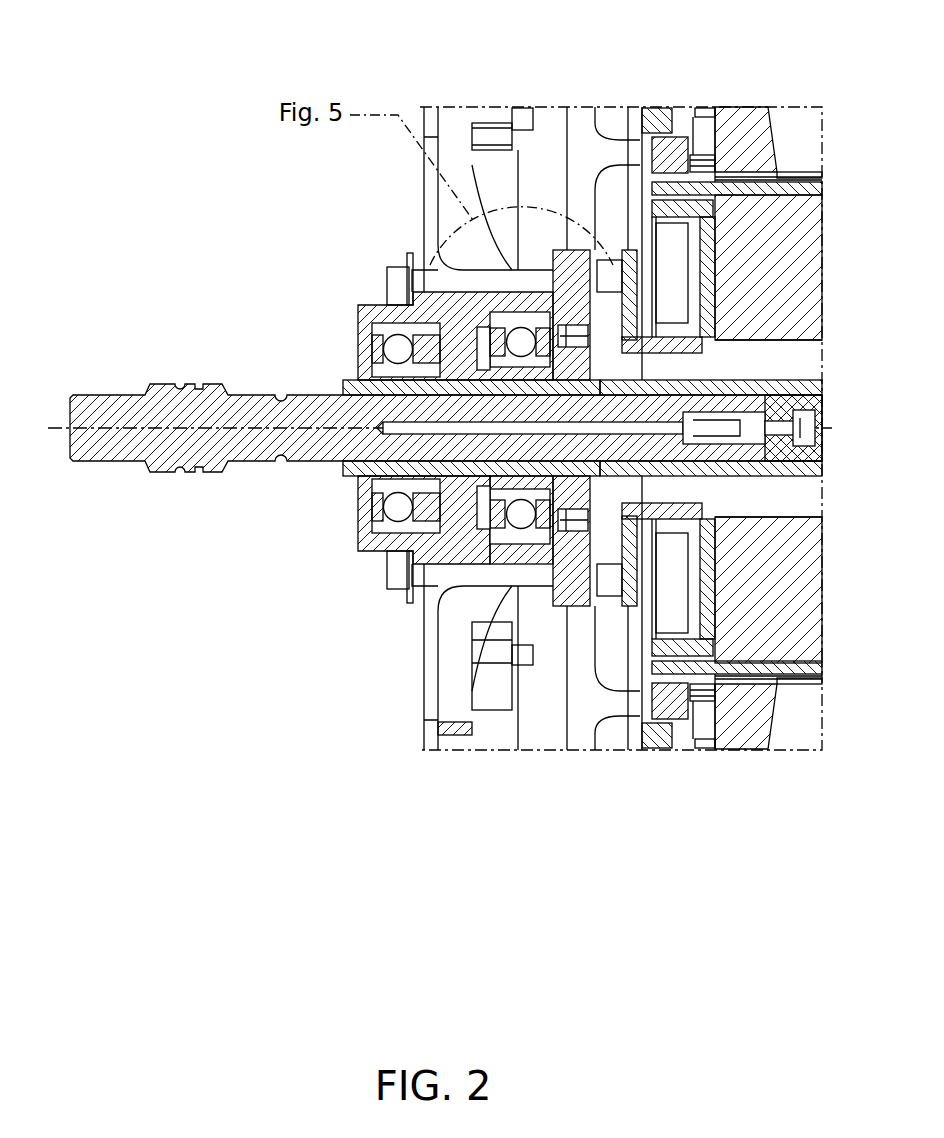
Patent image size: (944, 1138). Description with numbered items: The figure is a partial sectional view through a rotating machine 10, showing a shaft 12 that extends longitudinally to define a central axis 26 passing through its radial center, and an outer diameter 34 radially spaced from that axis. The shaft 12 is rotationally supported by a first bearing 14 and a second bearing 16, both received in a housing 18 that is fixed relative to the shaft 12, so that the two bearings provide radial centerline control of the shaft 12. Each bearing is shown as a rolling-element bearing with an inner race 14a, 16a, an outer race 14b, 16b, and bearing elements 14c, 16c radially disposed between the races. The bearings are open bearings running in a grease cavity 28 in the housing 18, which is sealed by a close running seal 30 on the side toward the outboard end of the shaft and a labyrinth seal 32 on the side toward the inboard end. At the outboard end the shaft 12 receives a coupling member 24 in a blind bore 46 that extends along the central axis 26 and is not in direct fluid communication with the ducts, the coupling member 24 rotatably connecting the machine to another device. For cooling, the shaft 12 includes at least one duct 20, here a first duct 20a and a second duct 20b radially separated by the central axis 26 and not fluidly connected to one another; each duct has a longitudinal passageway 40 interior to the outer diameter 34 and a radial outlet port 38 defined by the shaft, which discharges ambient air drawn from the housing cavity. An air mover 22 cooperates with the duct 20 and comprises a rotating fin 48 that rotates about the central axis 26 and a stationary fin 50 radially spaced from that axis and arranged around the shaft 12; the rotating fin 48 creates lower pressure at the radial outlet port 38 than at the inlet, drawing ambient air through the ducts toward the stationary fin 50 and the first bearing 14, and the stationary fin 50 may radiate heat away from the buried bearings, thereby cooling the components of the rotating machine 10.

The rotating machine 10 is at (190, 48).
The shaft 12 is at (812, 393).
The first bearing 14 is at (500, 295).
The inner race 14a is at (360, 530).
The outer race 14b is at (426, 296).
The bearing elements 14c is at (468, 552).
The second bearing 16 is at (355, 305).
The inner race 16a is at (360, 480).
The outer race 16b is at (358, 320).
The bearing elements 16c is at (358, 367).
The housing 18 is at (802, 222).
The duct 20 is at (878, 292).
The first duct 20a is at (790, 357).
The second duct 20b is at (790, 497).
The air mover 22 is at (582, 170).
The coupling member 24 is at (95, 447).
The central axis 26 is at (50, 430).
The grease cavity 28 is at (430, 301).
The close running seal 30 is at (472, 557).
The labyrinth seal 32 is at (527, 553).
The outer diameter 34 is at (760, 480).
The radial outlet port 38 is at (613, 550).
The passageway 40 is at (650, 502).
The blind bore 46 is at (332, 464).
The rotating fin 48 is at (572, 253).
The stationary fin 50 is at (605, 372).